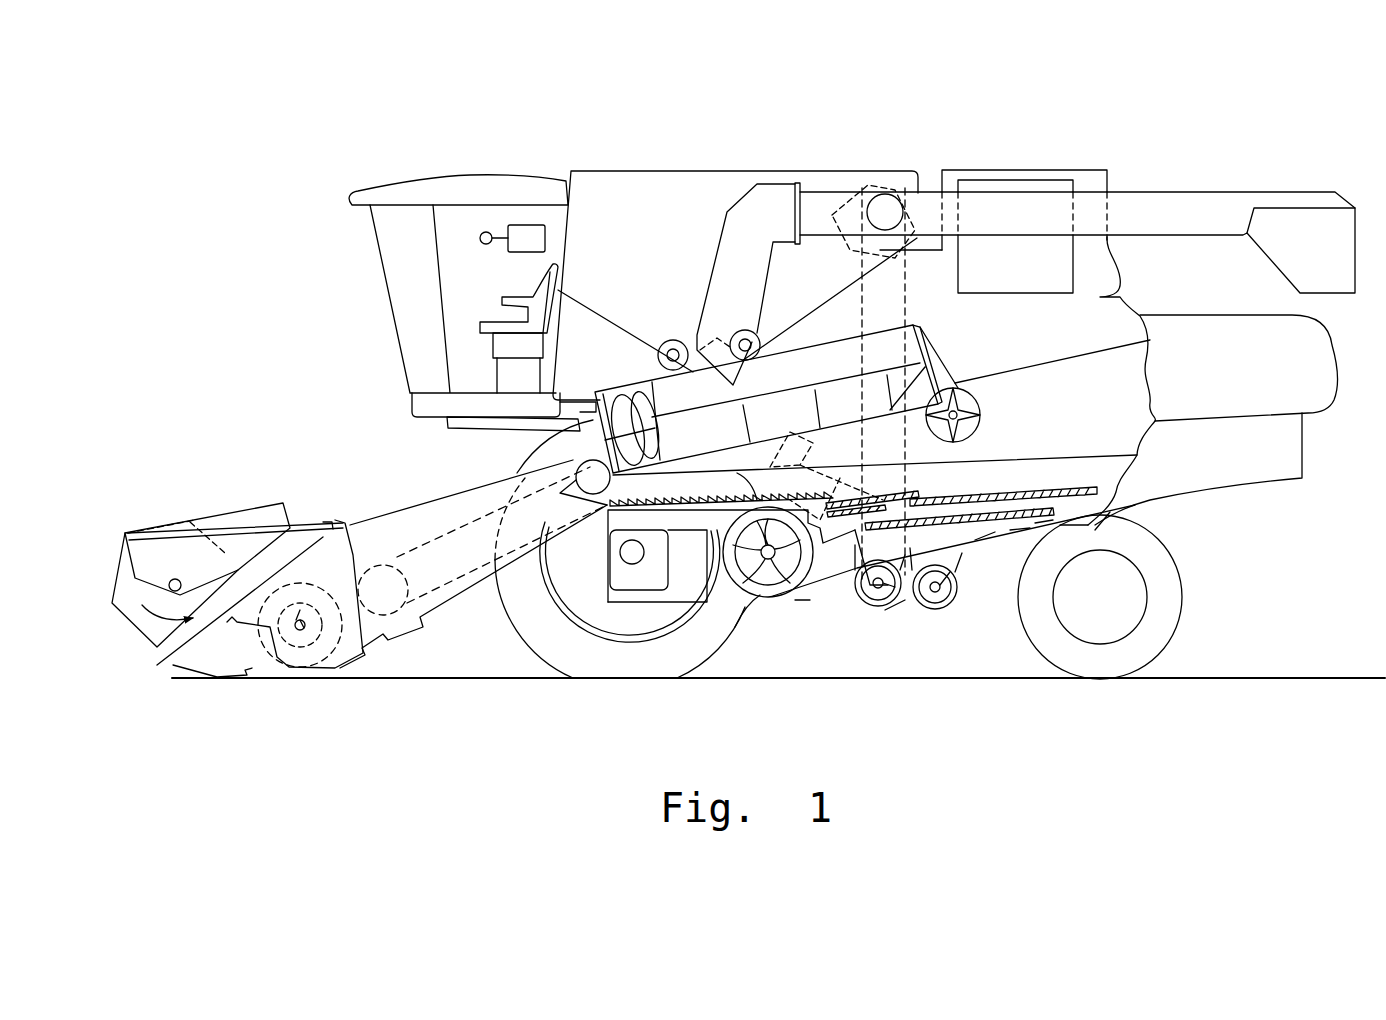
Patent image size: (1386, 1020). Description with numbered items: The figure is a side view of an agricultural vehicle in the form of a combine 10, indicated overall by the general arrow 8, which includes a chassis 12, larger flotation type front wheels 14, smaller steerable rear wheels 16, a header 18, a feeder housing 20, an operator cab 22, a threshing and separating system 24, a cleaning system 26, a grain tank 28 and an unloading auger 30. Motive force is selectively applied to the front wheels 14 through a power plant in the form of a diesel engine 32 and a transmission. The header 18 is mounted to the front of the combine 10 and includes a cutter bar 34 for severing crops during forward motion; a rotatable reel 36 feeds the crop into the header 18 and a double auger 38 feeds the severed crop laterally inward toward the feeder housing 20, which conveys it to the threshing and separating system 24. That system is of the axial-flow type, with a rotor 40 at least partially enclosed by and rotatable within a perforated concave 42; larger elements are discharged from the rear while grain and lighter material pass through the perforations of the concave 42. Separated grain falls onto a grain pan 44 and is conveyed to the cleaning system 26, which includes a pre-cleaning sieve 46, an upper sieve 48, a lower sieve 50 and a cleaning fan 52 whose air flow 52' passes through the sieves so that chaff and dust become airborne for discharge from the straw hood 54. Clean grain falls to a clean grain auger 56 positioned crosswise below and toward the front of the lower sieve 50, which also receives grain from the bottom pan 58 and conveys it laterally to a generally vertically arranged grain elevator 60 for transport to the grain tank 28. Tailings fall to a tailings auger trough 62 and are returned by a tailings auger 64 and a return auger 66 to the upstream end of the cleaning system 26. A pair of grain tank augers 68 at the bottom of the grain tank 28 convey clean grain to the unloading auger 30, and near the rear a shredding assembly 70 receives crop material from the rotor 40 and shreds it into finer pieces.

The combine harvester 8 is at (452, 158).
The combine 10 is at (522, 224).
The chassis 12 is at (1120, 510).
The front wheels 14 is at (530, 640).
The rear wheels 16 is at (1185, 618).
The header 18 is at (212, 500).
The feeder housing 20 is at (430, 493).
The operator cab 22 is at (385, 275).
The threshing and separating system 24 is at (536, 438).
The cleaning system 26 is at (838, 605).
The grain tank 28 is at (623, 176).
The unloading auger 30 is at (1200, 200).
The diesel engine 32 is at (1005, 185).
The cutter bar 34 is at (235, 680).
The rotatable reel 36 is at (110, 568).
The double auger 38 is at (304, 650).
The rotor 40 is at (620, 400).
The perforated concave 42 is at (805, 372).
The grain pan 44 is at (598, 520).
The pre-cleaning sieve 46 is at (920, 492).
The upper sieve 48 is at (1020, 493).
The lower sieve 50 is at (985, 535).
The cleaning fan 52 is at (768, 570).
The fan air flow 52' is at (760, 654).
The straw hood 54 is at (1312, 355).
The clean grain auger 56 is at (880, 610).
The bottom pan 58 is at (1038, 528).
The grain elevator 60 is at (912, 300).
The tailings auger trough 62 is at (1018, 533).
The tailings auger 64 is at (932, 612).
The return auger 66 is at (850, 470).
The grain tank augers 68 is at (665, 335).
The shredding assembly 70 is at (985, 391).